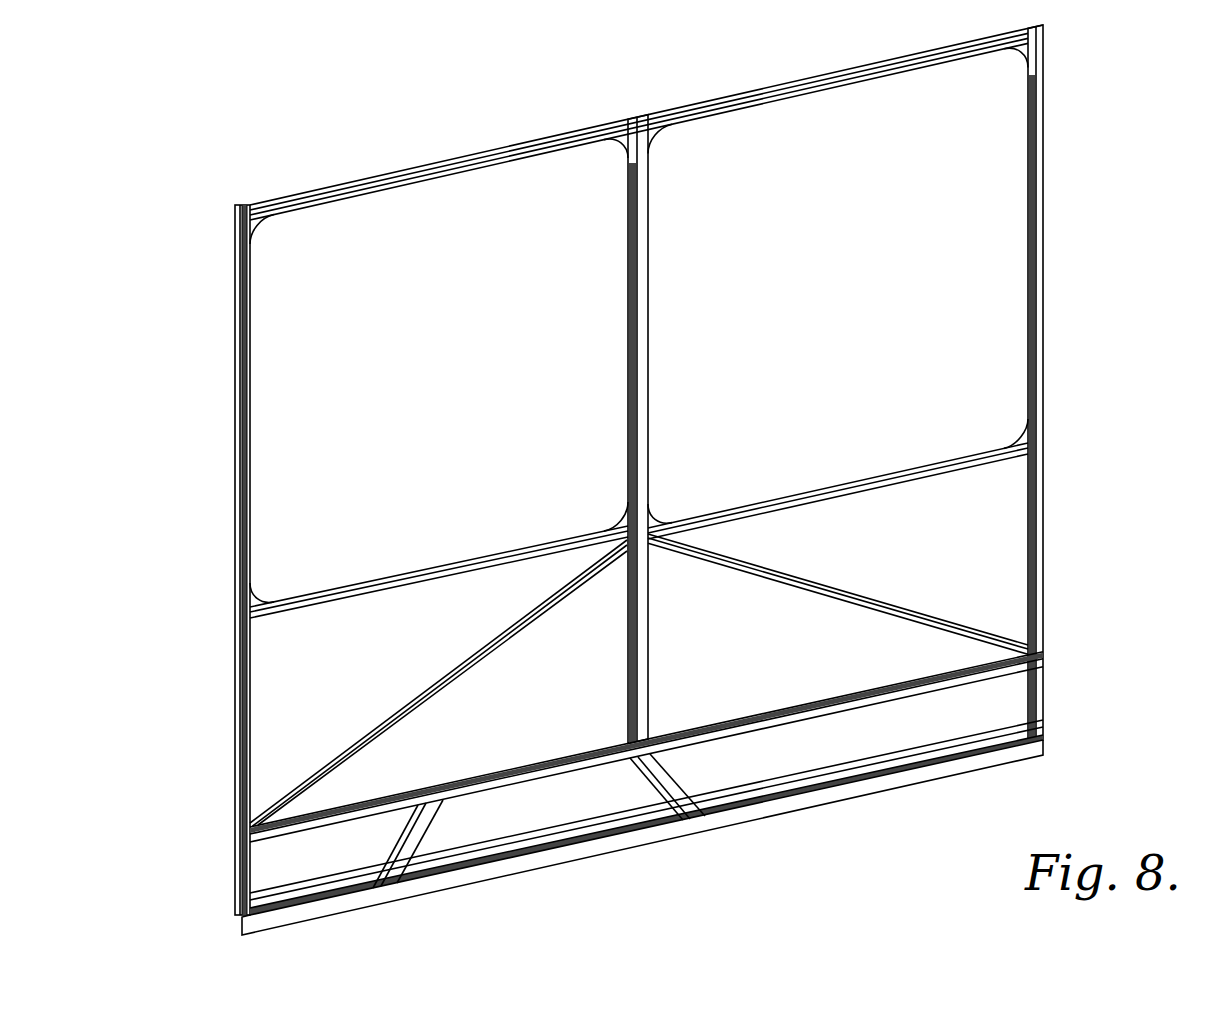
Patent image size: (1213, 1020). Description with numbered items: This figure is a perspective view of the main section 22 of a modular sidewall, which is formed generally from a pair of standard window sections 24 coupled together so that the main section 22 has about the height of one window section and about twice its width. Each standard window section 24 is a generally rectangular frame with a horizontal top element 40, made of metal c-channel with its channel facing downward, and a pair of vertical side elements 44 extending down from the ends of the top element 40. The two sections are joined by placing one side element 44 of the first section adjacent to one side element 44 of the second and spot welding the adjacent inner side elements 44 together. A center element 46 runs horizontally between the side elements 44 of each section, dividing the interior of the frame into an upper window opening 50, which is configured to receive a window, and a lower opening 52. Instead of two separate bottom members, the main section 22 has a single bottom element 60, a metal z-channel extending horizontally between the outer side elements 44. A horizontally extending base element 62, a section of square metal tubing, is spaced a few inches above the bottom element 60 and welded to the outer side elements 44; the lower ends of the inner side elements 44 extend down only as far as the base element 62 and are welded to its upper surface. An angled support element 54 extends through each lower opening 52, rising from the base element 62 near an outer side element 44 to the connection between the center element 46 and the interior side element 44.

The main section 22 is at (652, 474).
The standard window section 24 is at (652, 464).
The top element 40 is at (565, 132).
The side element 44 is at (1047, 216).
The center element 46 is at (862, 478).
The window opening 50 is at (893, 270).
The lower opening 52 is at (639, 669).
The angled support element 54 is at (812, 578).
The bottom element 60 is at (642, 797).
The base element 62 is at (755, 716).